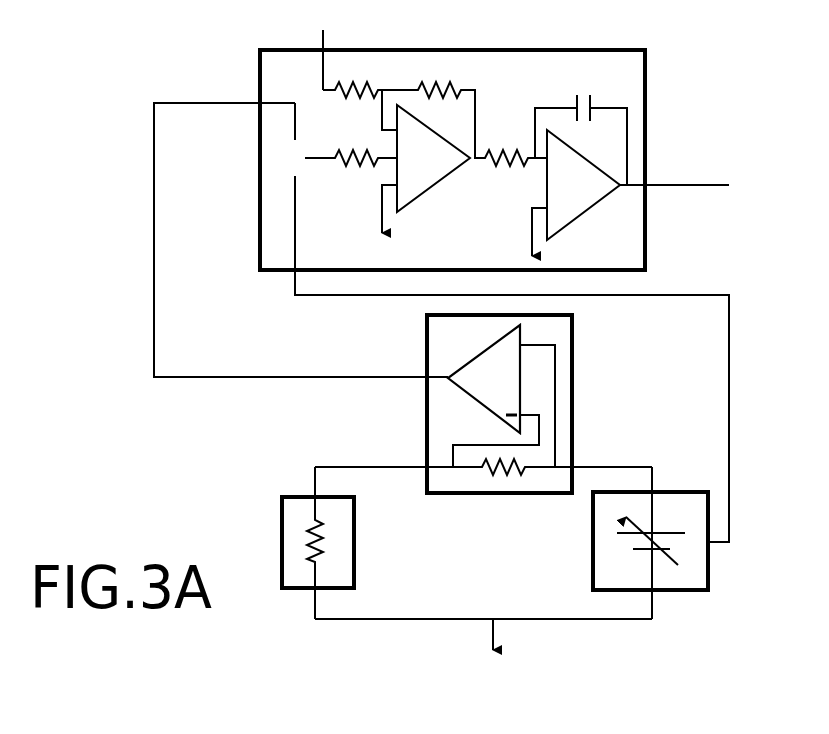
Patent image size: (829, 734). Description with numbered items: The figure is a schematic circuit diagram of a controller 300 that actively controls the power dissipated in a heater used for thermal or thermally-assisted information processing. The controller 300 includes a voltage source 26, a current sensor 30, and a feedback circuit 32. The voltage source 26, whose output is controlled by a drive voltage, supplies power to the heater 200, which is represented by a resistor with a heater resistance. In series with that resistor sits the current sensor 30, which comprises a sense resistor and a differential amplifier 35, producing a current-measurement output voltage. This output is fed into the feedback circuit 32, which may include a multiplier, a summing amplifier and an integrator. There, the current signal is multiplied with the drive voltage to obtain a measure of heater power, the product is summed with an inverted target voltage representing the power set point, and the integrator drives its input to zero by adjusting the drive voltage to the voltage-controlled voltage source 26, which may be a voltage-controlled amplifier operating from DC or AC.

The controller 300 is at (88, 276).
The feedback circuit 32 is at (645, 90).
The current sensor 30 is at (572, 385).
The differential amplifier 35 is at (524, 337).
The heater 200 is at (282, 500).
The voltage source 26 is at (708, 582).